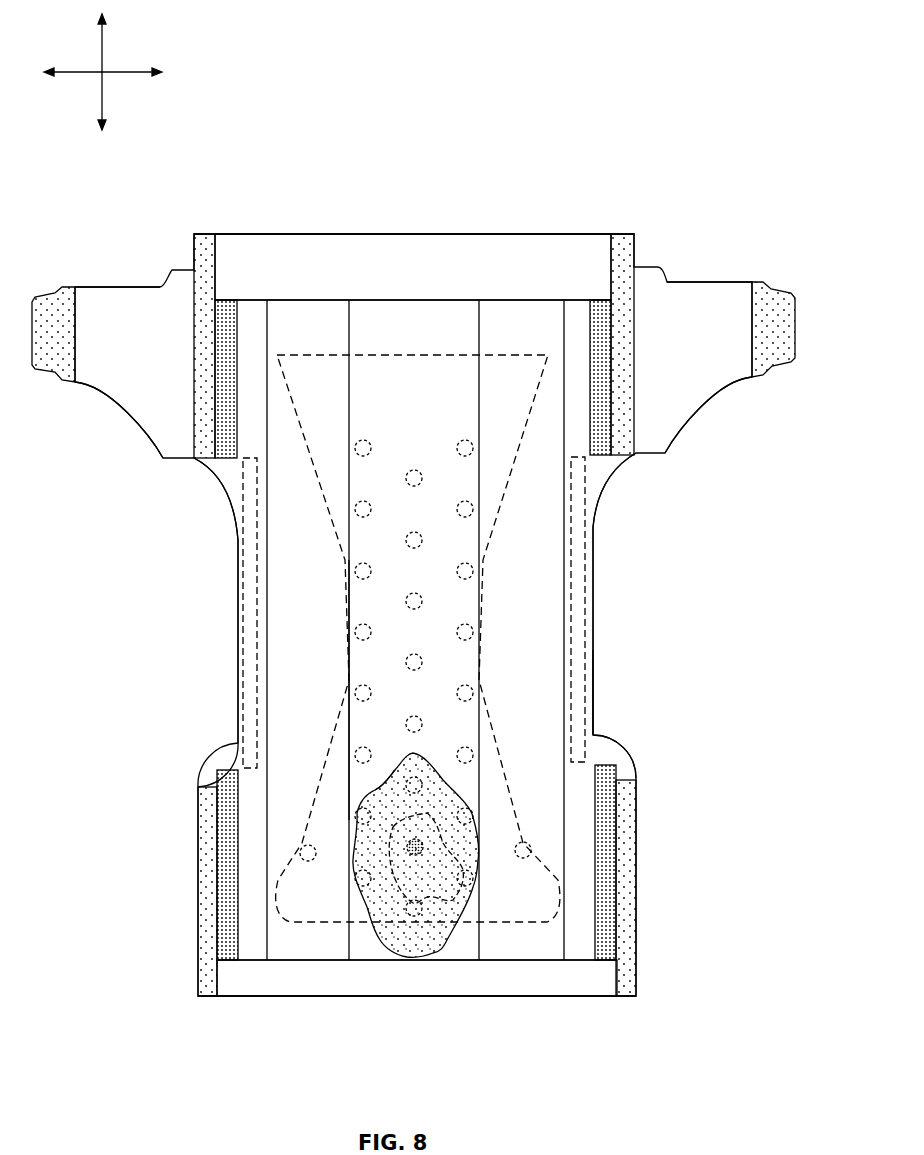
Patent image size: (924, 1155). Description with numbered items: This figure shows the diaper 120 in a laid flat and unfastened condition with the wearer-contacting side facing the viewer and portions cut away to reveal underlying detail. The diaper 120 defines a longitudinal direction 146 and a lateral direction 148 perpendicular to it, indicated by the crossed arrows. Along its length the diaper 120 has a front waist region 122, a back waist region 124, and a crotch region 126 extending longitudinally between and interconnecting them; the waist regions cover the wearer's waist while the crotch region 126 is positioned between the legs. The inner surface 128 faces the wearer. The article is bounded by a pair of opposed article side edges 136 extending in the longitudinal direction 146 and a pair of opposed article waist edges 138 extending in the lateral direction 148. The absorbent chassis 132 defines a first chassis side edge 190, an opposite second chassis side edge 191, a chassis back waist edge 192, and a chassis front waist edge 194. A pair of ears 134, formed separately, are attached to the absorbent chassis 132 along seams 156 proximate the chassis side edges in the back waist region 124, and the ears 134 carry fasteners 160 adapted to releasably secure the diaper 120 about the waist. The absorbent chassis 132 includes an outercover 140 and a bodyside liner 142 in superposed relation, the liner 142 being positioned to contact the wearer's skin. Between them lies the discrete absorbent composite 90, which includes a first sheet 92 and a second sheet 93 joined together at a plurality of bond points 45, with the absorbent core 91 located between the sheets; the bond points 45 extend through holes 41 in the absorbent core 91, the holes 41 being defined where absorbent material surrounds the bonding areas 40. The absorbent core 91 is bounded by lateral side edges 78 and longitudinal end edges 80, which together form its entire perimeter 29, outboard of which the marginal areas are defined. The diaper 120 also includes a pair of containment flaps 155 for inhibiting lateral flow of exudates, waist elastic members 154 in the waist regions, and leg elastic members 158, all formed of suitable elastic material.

The diaper 120 is at (553, 192).
The front waist region 122 is at (652, 821).
The back waist region 124 is at (657, 247).
The crotch region 126 is at (600, 637).
The inner surface 128 is at (455, 557).
The absorbent chassis 132 is at (595, 713).
The ears 134 is at (120, 300).
The article side edges 136 is at (237, 538).
The article waist edges 138 is at (392, 235).
The outercover 140 is at (440, 945).
The bodyside liner 142 is at (433, 412).
The longitudinal direction 146 is at (102, 52).
The lateral direction 148 is at (126, 74).
The waist elastic members 154 is at (255, 250).
The containment flaps 155 is at (300, 658).
The seams 156 is at (200, 442).
The leg elastic members 158 is at (245, 627).
The fasteners 160 is at (47, 300).
The first chassis side edge 190 is at (238, 712).
The second chassis side edge 191 is at (618, 778).
The chassis back waist edge 192 is at (478, 232).
The chassis front waist edge 194 is at (448, 990).
The perimeter 29 is at (520, 932).
The bonding areas 40 is at (470, 572).
The holes 41 is at (300, 852).
The bond points 45 is at (345, 567).
The absorbent core lateral side edges 78 is at (345, 730).
The longitudinal end edges 80 is at (325, 355).
The absorbent composite 90 is at (413, 852).
The absorbent core 91 is at (423, 848).
The first sheet 92 is at (472, 880).
The second sheet 93 is at (390, 795).